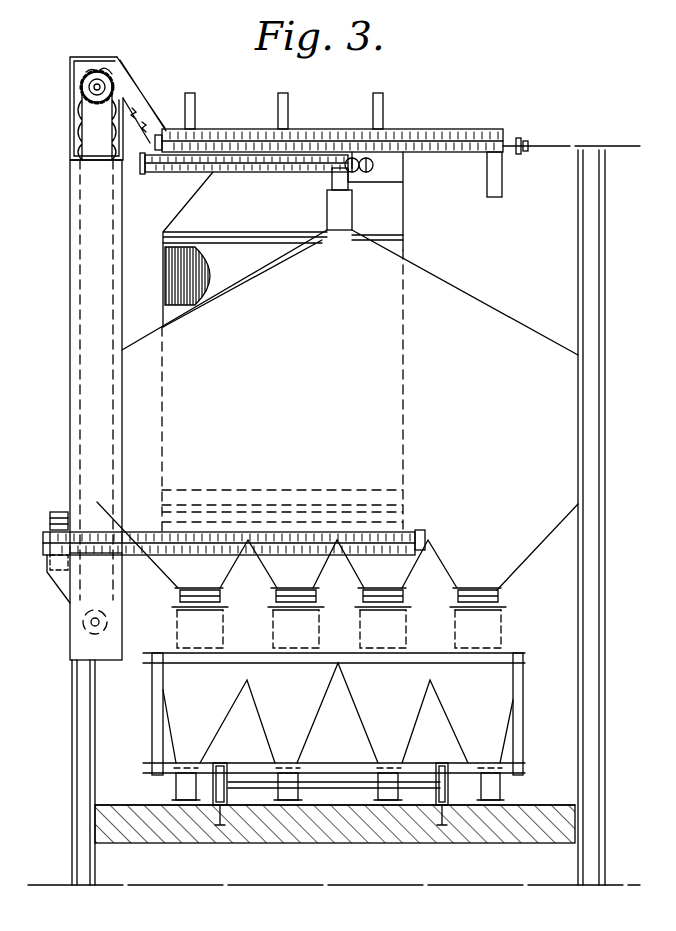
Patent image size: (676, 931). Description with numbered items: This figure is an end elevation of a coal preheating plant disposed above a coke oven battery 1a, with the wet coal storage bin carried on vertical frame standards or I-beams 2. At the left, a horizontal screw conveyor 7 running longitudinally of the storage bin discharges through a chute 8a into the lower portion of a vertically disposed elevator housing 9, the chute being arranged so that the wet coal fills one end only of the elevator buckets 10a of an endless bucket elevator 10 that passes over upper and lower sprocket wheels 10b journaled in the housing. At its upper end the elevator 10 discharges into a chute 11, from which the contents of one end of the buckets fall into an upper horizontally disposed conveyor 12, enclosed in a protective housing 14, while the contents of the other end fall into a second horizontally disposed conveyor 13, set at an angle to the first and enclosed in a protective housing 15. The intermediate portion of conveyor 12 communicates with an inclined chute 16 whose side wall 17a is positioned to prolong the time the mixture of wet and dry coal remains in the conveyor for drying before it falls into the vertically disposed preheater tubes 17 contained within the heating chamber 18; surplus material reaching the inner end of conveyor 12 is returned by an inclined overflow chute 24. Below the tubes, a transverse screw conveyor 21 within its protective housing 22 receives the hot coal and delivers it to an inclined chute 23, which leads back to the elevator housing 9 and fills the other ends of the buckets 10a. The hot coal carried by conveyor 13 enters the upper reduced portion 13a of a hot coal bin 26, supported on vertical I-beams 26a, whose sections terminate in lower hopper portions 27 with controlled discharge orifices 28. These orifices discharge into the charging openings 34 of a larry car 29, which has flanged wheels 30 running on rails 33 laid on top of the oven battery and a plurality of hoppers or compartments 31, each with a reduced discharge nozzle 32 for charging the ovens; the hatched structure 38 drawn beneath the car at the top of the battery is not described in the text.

The oven battery 1a is at (300, 867).
The vertical frame standards 2 is at (78, 718).
The horizontal screw conveyor 7 is at (40, 523).
The chute 8a is at (58, 560).
The elevator housing 9 is at (72, 385).
The endless bucket elevator 10 is at (72, 118).
The elevator buckets 10a is at (115, 58).
The sprocket wheels 10b is at (78, 88).
The chute 11 is at (143, 92).
The upper horizontally disposed conveyor 12 is at (237, 132).
The second horizontally disposed conveyor 13 is at (318, 130).
The upper reduced portion of hot coal bin 13a is at (338, 205).
The protective housing 14 is at (427, 130).
The protective housing 15 is at (275, 174).
The inclined chute 16 is at (395, 175).
The preheater tubes 17 is at (178, 277).
The side wall 17a is at (190, 200).
The heating chamber 18 is at (242, 283).
The transverse screw conveyor 21 is at (137, 556).
The protective housing 22 is at (87, 528).
The inclined chute 23 is at (63, 578).
The inclined overflow chute 24 is at (493, 181).
The hot coal bin 26 is at (462, 313).
The vertical supports 26a is at (590, 368).
The lower hopper portion 27 is at (387, 547).
The discharge orifice 28 is at (210, 598).
The larry car 29 is at (152, 693).
The flanged wheels 30 is at (227, 795).
The hoppers or compartments 31 is at (338, 731).
The reduced discharge nozzle 32 is at (298, 790).
The rails 33 is at (202, 803).
The charging openings 34 is at (272, 608).
The foundation 38 is at (440, 808).